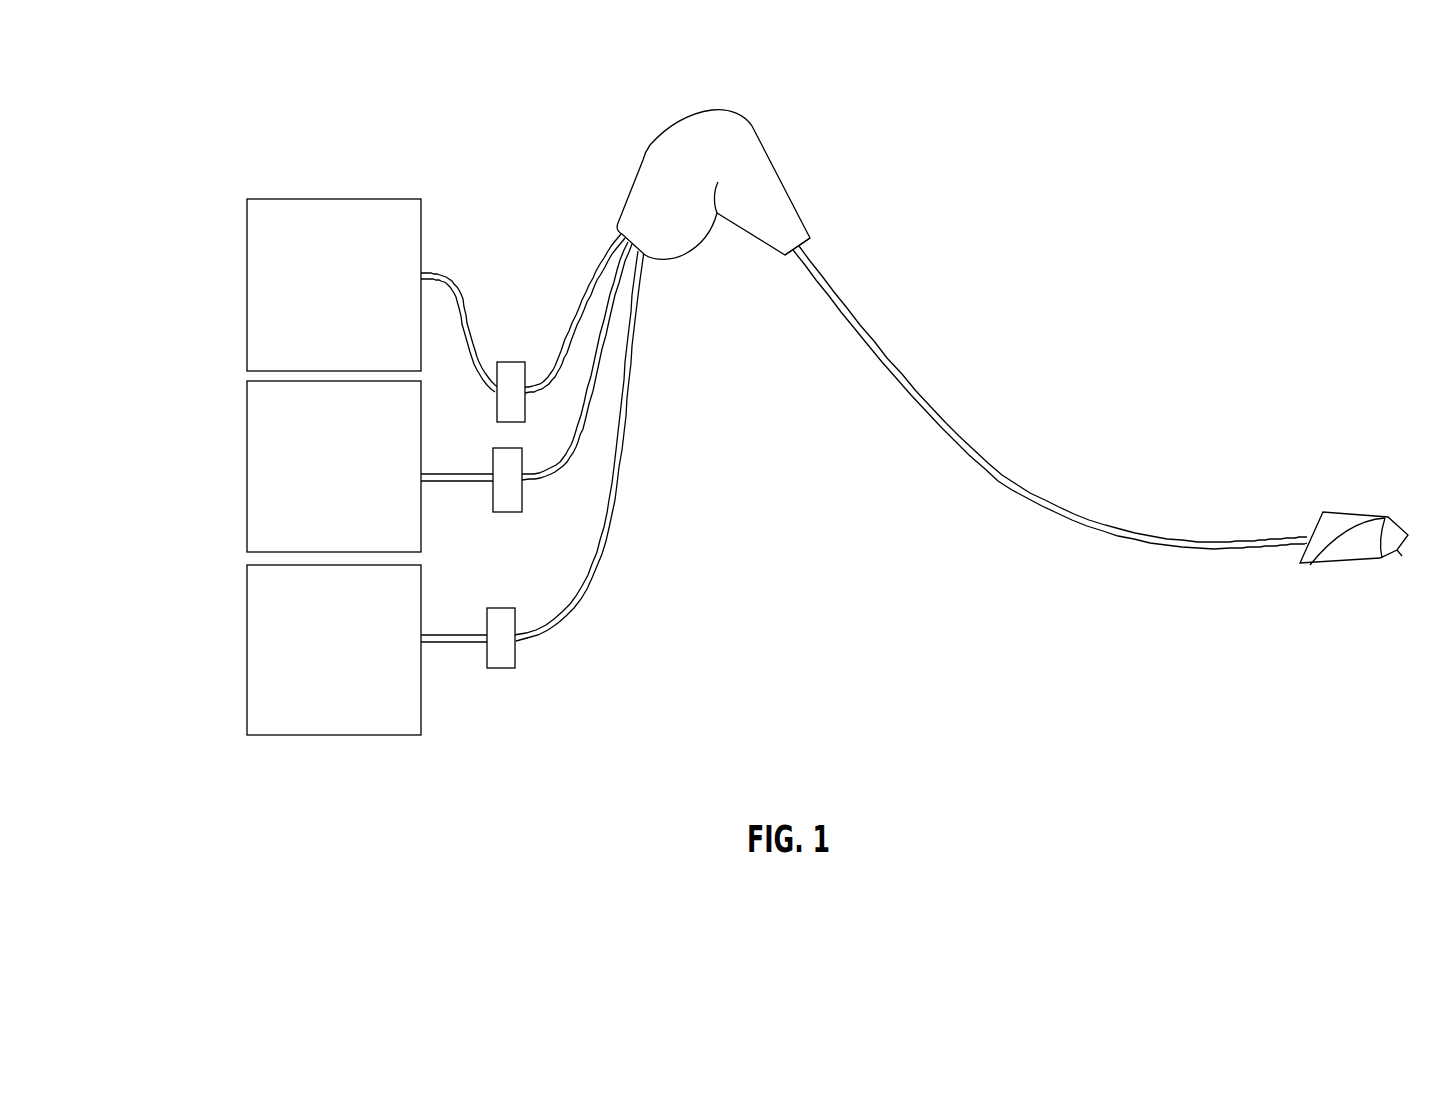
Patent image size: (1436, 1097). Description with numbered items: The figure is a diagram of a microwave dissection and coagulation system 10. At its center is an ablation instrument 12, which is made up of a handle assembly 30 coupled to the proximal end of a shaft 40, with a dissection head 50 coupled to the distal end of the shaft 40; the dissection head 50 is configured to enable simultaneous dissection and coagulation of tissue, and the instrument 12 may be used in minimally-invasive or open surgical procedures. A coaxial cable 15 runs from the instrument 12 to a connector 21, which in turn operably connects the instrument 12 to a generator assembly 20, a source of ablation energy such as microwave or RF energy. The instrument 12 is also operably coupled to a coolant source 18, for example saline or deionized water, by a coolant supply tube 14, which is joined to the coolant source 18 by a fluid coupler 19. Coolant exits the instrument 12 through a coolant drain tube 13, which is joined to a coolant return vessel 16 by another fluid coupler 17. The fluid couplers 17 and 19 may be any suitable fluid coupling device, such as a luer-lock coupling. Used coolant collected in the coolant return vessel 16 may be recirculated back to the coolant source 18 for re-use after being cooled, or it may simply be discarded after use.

The microwave dissection and coagulation system 10 is at (993, 78).
The ablation instrument 12 is at (822, 252).
The coolant drain tube 13 is at (633, 312).
The coolant supply tube 14 is at (597, 367).
The coaxial cable 15 is at (585, 288).
The coolant return vessel 16 is at (247, 650).
The fluid coupler 17 is at (516, 645).
The coolant source 18 is at (247, 467).
The fluid coupler 19 is at (524, 490).
The generator assembly 20 is at (247, 285).
The connector 21 is at (511, 362).
The handle assembly 30 is at (758, 132).
The shaft 40 is at (908, 378).
The dissection head 50 is at (1368, 512).